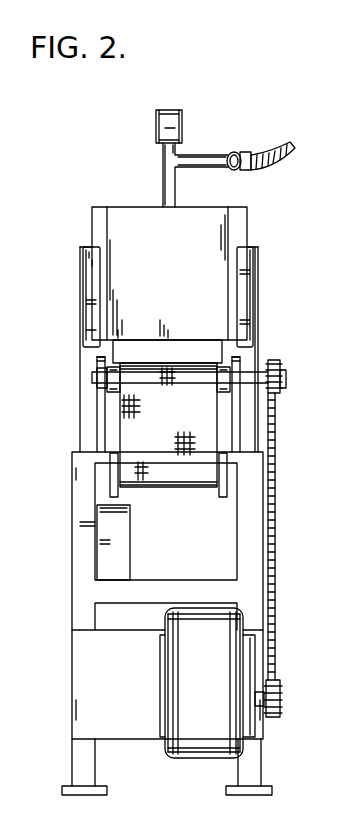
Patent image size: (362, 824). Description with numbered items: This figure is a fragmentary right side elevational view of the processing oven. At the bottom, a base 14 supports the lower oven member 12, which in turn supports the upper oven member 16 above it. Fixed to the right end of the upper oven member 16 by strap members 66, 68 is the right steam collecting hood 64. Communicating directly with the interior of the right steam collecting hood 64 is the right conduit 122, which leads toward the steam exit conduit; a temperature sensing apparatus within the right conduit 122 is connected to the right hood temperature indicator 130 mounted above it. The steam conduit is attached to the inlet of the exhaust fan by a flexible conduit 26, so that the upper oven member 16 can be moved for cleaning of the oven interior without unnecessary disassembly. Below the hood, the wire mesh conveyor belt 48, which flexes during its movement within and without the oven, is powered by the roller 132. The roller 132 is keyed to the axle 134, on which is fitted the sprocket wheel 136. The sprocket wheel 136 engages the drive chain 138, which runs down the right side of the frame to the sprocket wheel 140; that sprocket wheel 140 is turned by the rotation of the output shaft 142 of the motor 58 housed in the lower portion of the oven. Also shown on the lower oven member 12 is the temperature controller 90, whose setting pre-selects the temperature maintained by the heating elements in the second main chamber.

The lower oven member 12 is at (79, 411).
The base 14 is at (74, 598).
The upper oven member 16 is at (78, 323).
The flexible conduit 26 is at (276, 153).
The conveyor belt 48 is at (162, 488).
The motor 58 is at (197, 752).
The right steam collecting hood 64 is at (127, 207).
The strap member 66 is at (91, 266).
The strap member 68 is at (248, 288).
The temperature controller 90 is at (123, 560).
The right conduit 122 is at (171, 195).
The right hood temperature indicator 130 is at (178, 122).
The roller 132 is at (108, 391).
The axle 134 is at (260, 377).
The sprocket wheel 136 is at (287, 390).
The drive chain 138 is at (276, 553).
The sprocket wheel 140 is at (280, 711).
The output shaft 142 is at (259, 705).